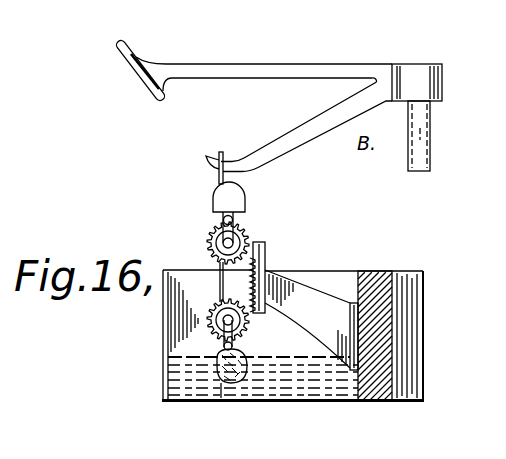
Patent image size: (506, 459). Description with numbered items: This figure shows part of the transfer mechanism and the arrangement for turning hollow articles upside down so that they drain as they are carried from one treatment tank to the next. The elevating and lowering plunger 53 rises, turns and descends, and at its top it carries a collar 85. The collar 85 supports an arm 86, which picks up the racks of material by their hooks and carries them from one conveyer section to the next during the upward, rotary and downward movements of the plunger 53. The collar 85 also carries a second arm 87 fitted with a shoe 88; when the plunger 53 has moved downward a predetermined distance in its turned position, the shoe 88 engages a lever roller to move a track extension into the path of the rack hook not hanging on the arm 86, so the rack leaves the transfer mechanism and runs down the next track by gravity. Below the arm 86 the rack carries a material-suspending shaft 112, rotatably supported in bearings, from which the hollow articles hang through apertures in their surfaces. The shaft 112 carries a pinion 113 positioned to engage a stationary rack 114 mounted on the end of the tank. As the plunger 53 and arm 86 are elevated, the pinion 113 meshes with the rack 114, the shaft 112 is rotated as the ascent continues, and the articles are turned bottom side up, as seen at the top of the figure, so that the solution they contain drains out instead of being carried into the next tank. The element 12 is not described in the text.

The rod 12 is at (218, 180).
The elevating and lowering plunger 53 is at (428, 128).
The collar 85 is at (440, 72).
The arm 86 is at (298, 133).
The arm 87 is at (259, 72).
The shoe 88 is at (128, 54).
The material-suspending shaft 112 is at (238, 221).
The pinion 113 is at (250, 232).
The stationary rack 114 is at (268, 249).